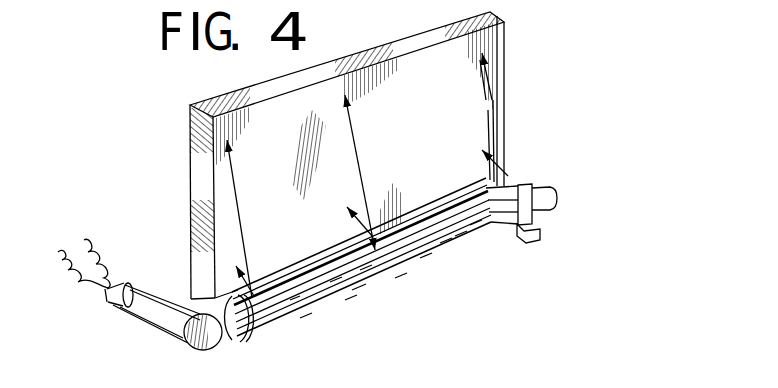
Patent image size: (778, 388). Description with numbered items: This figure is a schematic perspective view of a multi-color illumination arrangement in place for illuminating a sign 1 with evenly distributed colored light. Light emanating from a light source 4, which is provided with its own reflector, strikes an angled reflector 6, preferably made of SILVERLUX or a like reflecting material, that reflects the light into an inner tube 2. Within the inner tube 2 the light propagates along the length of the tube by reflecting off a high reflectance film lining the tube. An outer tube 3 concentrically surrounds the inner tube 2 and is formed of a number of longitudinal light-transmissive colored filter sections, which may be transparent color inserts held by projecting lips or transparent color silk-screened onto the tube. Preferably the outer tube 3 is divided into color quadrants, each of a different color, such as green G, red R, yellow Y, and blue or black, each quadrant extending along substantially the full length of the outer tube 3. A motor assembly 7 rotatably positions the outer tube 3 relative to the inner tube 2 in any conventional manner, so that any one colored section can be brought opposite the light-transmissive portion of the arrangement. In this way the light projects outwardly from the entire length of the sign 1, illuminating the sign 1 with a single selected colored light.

The sign 1 is at (497, 77).
The inner tube 2 is at (250, 333).
The outer tube 3 is at (413, 270).
The light source 4 is at (118, 292).
The reflector 6 is at (210, 347).
The motor assembly 7 is at (557, 198).
The red color quadrant R is at (470, 207).
The green color quadrant G is at (360, 290).
The yellow color quadrant Y is at (480, 223).